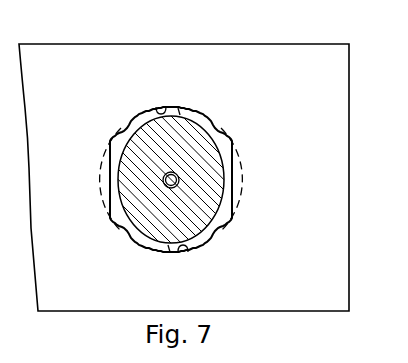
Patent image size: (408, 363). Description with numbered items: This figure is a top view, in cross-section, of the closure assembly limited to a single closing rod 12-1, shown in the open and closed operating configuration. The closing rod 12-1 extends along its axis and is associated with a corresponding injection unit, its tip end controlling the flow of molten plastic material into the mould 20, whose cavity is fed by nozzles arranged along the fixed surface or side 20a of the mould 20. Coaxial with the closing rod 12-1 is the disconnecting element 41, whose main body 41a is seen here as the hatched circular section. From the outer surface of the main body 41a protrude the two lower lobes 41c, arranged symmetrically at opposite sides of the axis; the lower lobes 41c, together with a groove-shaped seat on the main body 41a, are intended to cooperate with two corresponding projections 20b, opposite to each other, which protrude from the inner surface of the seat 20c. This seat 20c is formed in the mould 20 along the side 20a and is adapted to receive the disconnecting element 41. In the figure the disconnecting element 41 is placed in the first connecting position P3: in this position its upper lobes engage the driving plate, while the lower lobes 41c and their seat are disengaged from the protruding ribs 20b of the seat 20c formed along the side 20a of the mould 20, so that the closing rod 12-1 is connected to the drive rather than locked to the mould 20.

The mould 20 is at (288, 44).
The fixed surface or side of the mould 20a is at (292, 104).
The projections 20b is at (96, 176).
The seat 20c is at (150, 99).
The disconnecting element 41 is at (116, 155).
The main body 41a is at (212, 167).
The lower lobes 41c is at (168, 105).
The closing rod 12-1 is at (157, 167).
The first connecting position P3 is at (146, 121).